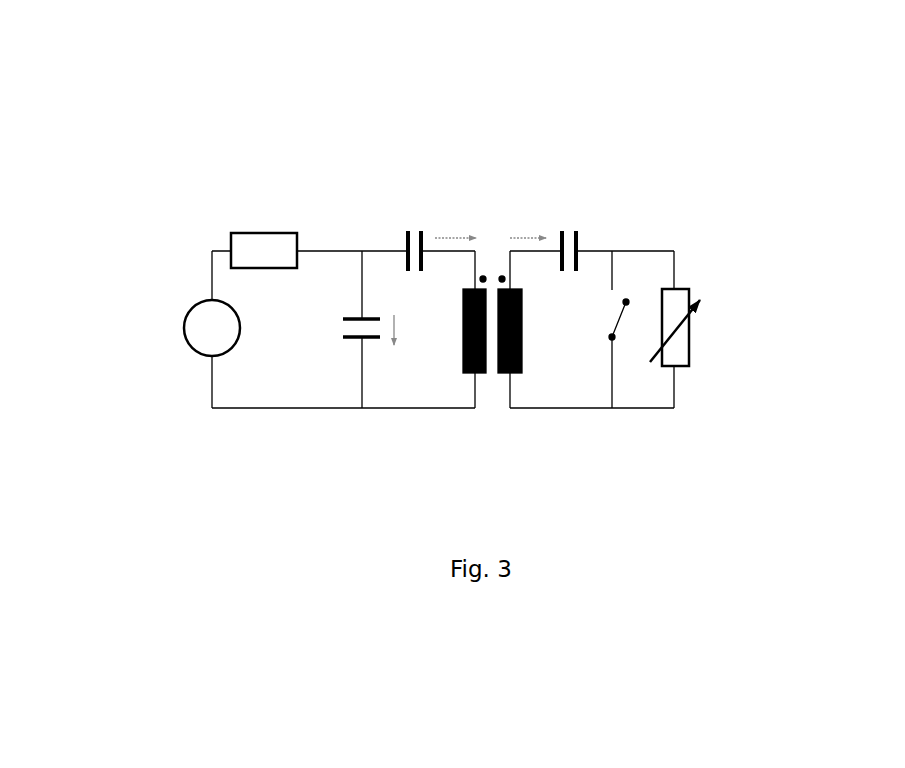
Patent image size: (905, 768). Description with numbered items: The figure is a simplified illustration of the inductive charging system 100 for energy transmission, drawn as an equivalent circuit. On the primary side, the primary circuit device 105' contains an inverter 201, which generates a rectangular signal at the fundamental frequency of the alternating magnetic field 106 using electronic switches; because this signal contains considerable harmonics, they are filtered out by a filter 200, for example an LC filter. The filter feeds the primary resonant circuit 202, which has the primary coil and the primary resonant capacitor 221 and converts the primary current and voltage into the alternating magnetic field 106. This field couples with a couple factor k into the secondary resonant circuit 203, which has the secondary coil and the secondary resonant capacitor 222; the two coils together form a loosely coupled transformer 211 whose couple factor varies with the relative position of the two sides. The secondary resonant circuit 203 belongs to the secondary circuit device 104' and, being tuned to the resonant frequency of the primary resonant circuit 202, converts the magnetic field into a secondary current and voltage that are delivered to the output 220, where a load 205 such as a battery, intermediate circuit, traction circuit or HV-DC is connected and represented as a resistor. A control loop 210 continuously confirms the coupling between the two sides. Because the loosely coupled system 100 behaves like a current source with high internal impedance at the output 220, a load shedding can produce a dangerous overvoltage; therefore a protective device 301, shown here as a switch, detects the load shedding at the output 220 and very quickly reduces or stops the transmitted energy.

The inductive charging system 100 is at (203, 122).
The control loop 210 is at (130, 227).
The inverter 201 is at (245, 210).
The filter 200 is at (360, 217).
The primary resonant capacitor 221 is at (420, 227).
The alternating magnetic field 106 is at (490, 233).
The loosely coupled transformer 211 is at (538, 189).
The secondary resonant capacitor 222 is at (575, 213).
The protective device 301 is at (612, 290).
The output 220 is at (690, 218).
The load 205 is at (687, 288).
The primary circuit device 105' is at (343, 454).
The primary resonant circuit 202 is at (438, 370).
The secondary resonant circuit 203 is at (537, 372).
The secondary circuit device 104' is at (620, 457).